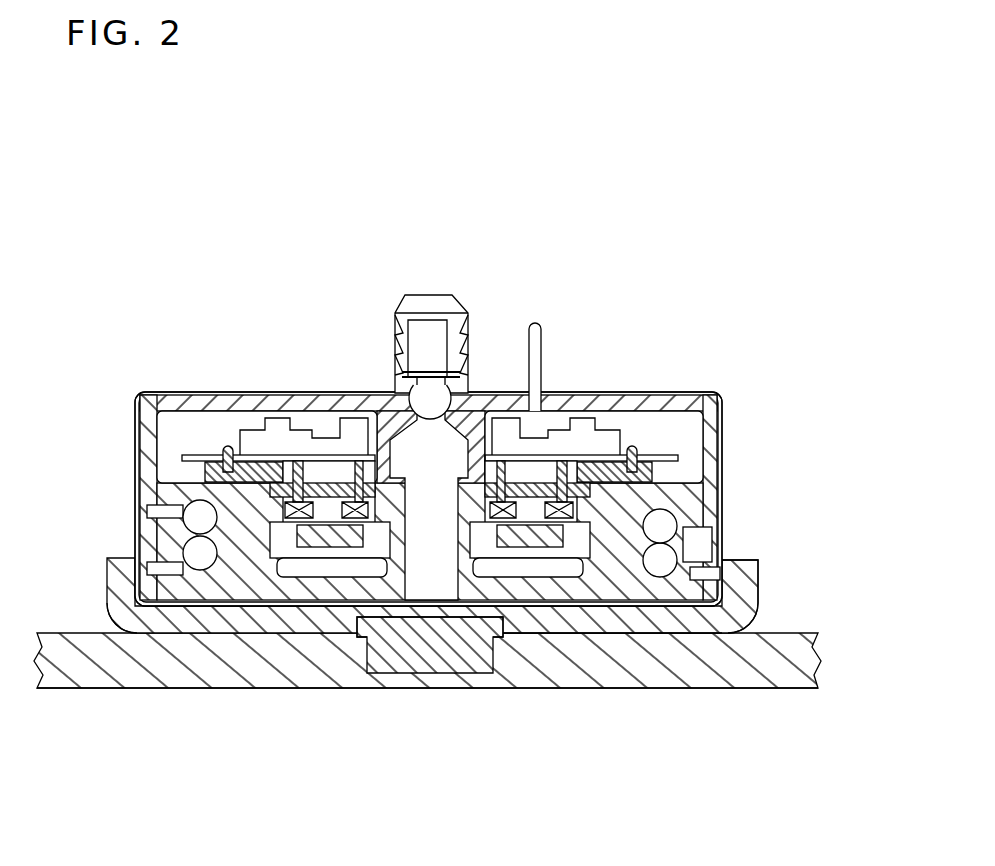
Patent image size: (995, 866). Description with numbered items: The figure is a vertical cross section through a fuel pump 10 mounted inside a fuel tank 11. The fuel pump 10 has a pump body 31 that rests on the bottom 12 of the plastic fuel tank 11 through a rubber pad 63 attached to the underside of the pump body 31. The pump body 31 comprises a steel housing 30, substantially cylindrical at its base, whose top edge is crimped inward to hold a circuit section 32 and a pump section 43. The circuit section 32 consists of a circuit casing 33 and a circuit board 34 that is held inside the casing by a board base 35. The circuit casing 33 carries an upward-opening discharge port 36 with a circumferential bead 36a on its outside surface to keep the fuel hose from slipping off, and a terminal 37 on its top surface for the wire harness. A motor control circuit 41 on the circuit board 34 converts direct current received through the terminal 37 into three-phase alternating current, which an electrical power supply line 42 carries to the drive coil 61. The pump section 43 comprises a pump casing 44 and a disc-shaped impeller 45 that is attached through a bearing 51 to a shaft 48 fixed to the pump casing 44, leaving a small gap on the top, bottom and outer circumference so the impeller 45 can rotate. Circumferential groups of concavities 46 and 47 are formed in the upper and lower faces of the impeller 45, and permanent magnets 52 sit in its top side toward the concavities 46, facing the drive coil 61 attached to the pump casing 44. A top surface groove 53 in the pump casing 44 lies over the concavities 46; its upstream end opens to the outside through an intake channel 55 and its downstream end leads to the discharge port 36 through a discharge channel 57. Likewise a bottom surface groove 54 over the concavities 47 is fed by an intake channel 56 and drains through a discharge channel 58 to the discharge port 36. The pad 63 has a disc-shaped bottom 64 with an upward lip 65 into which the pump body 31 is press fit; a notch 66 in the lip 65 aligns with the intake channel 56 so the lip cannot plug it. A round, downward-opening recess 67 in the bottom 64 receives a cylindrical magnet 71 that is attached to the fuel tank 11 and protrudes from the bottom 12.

The fuel pump 10 is at (289, 295).
The fuel tank 11 is at (582, 690).
The bottom of the fuel tank 12 is at (787, 637).
The housing 30 is at (723, 408).
The pump body 31 is at (621, 370).
The circuit section 32 is at (109, 433).
The circuit casing 33 is at (133, 402).
The circuit board 34 is at (672, 478).
The board base 35 is at (703, 468).
The discharge port 36 is at (394, 308).
The bead 36a is at (390, 370).
The terminal 37 is at (540, 325).
The motor control circuit 41 is at (508, 440).
The electrical power supply line 42 is at (232, 446).
The pump section 43 is at (114, 548).
The pump casing 44 is at (150, 528).
The impeller 45 is at (687, 545).
The group of concavities 46 is at (178, 476).
The group of concavities 47 is at (200, 572).
The shaft 48 is at (412, 600).
The bearing 51 is at (345, 548).
The permanent magnets 52 is at (300, 578).
The top surface groove 53 is at (175, 452).
The bottom surface groove 54 is at (160, 598).
The intake channel 55 is at (712, 513).
The intake channel 56 is at (707, 572).
The discharge channel 57 is at (157, 513).
The discharge channel 58 is at (147, 575).
The drive coil 61 is at (282, 462).
The pad 63 is at (93, 627).
The bottom 64 is at (522, 618).
The lip 65 is at (107, 587).
The notch 66 is at (745, 582).
The recess 67 is at (478, 628).
The magnet 71 is at (421, 650).